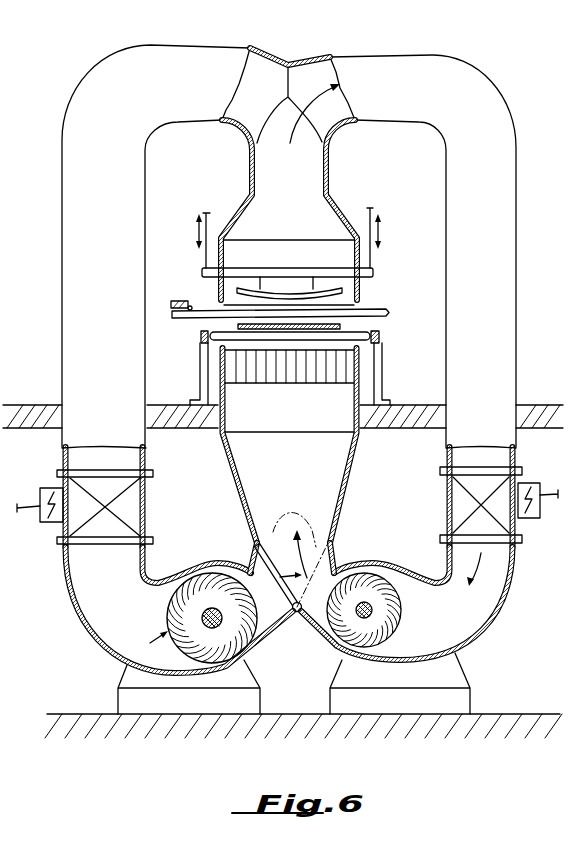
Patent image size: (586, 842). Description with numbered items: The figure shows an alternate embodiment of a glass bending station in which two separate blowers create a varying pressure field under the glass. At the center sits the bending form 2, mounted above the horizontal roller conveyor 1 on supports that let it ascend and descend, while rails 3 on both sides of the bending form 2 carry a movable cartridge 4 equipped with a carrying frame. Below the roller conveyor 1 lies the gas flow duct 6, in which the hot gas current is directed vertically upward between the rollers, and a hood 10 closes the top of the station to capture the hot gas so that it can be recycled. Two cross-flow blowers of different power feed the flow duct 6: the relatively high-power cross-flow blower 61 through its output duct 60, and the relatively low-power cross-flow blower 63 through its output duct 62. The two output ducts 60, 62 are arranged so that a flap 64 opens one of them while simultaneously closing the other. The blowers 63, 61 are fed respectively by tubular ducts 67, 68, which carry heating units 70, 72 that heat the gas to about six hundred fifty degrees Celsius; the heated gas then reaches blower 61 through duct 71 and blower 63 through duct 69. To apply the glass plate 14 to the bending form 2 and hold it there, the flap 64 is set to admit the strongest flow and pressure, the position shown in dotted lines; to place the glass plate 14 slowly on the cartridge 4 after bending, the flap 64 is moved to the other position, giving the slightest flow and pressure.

The horizontal roller conveyor 1 is at (217, 339).
The bending form 2 is at (288, 291).
The rails 3 is at (380, 310).
The cartridge 4 is at (176, 300).
The gas flow duct 6 is at (334, 431).
The hood 10 is at (326, 211).
The glass plate 14 is at (340, 326).
The output duct 60 is at (248, 566).
The cross-flow blower 61 is at (135, 655).
The output duct 62 is at (334, 563).
The cross-flow blower 63 is at (413, 618).
The flap 64 is at (265, 550).
The tubular duct 67 is at (395, 58).
The tubular duct 68 is at (180, 58).
The duct 69 is at (481, 594).
The heating unit 70 is at (505, 519).
The duct 71 is at (107, 608).
The heating unit 72 is at (78, 519).